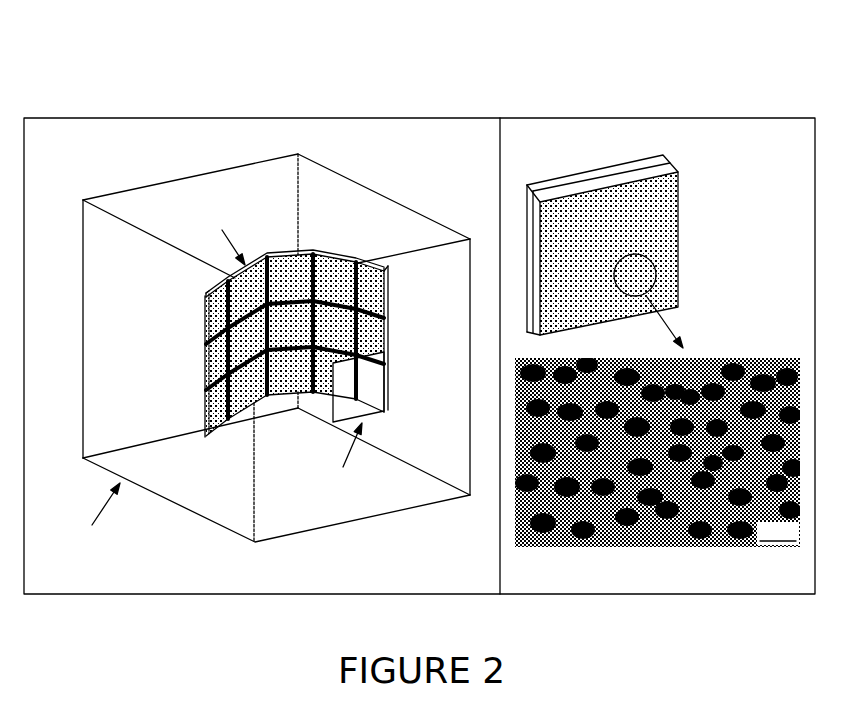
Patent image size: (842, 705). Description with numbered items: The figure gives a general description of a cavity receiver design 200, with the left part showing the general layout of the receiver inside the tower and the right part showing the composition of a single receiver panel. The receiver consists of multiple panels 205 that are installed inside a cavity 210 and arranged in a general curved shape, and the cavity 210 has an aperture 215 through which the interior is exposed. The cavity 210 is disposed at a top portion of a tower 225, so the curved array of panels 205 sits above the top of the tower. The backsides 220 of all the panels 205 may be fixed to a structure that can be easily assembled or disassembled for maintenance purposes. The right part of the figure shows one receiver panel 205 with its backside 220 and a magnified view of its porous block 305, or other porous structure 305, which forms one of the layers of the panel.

The receiver design 200 is at (246, 82).
The panels 205 is at (303, 262).
The cavity 210 is at (417, 247).
The aperture 215 is at (333, 405).
The backsides 220 is at (194, 309).
The tower 225 is at (402, 512).
The porous block 305 is at (727, 388).